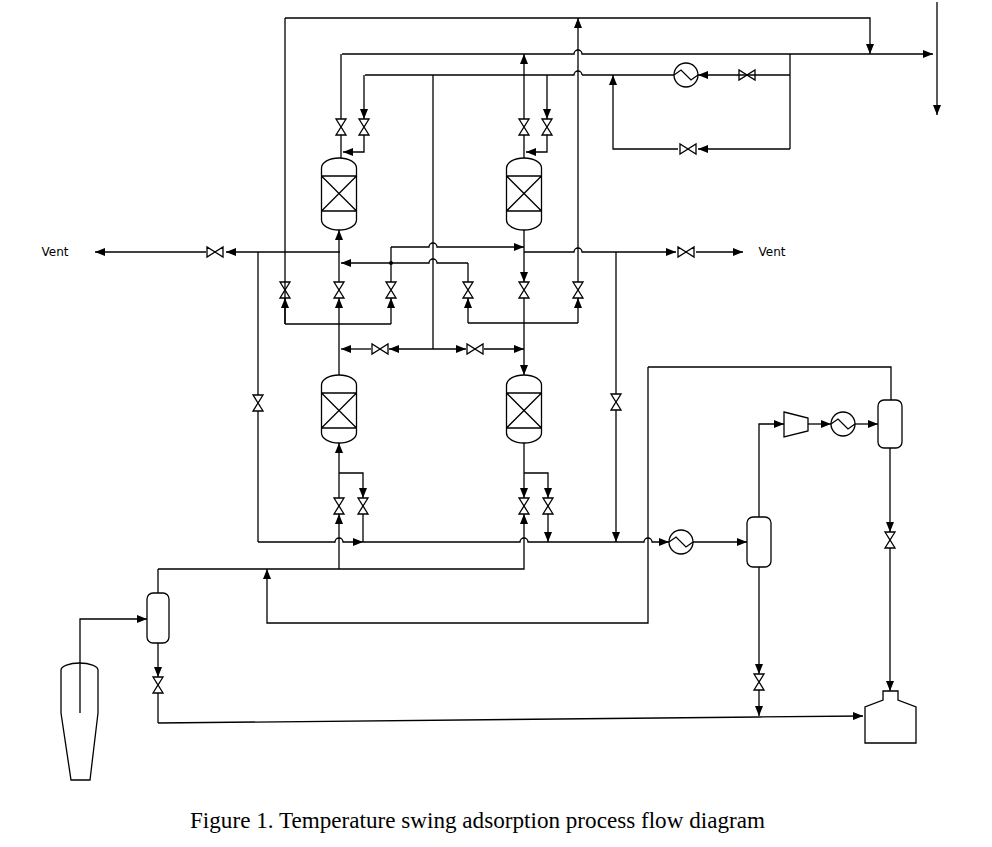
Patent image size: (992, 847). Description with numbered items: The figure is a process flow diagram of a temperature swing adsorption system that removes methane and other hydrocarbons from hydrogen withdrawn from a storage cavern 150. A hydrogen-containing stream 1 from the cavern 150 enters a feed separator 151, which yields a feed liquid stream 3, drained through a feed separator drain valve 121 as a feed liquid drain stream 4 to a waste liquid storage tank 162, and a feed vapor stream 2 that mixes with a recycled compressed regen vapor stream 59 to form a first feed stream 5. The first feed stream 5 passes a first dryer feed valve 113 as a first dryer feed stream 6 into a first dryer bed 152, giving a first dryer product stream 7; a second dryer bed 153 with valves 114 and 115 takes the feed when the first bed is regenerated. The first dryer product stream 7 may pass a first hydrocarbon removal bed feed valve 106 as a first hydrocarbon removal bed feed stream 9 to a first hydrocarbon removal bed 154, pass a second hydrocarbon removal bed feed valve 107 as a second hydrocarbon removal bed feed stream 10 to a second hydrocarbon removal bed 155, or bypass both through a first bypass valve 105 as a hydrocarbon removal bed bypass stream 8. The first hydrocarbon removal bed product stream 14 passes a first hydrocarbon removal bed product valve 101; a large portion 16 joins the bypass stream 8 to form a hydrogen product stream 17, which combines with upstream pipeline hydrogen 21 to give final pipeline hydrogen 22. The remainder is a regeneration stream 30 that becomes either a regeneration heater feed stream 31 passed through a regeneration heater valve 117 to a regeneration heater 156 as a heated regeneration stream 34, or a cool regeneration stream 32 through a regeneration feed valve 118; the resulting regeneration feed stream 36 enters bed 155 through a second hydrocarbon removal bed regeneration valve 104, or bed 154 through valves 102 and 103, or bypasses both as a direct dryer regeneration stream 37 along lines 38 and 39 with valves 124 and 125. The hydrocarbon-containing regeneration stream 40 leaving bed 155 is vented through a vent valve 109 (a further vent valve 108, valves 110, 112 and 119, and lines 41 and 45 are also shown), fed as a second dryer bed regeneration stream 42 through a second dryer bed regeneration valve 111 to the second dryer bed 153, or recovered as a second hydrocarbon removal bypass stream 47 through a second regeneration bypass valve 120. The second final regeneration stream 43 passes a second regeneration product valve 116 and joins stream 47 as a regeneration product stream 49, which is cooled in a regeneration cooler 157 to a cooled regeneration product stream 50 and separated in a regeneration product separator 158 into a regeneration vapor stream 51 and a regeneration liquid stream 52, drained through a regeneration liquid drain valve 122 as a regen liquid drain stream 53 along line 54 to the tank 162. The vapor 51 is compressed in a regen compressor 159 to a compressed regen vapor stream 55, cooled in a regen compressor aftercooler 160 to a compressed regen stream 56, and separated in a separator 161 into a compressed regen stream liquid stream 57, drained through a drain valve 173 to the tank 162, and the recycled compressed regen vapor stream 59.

The hydrogen-containing stream 1 is at (113, 666).
The feed vapor stream 2 is at (334, 548).
The feed liquid stream 3 is at (168, 660).
The feed liquid drain stream 4 is at (458, 711).
The first feed stream 5 is at (331, 541).
The first dryer feed stream 6 is at (343, 470).
The first dryer product stream 7 is at (331, 349).
The hydrocarbon removal bed bypass stream 8 is at (276, 171).
The first hydrocarbon removal bed feed stream 9 is at (345, 256).
The second hydrocarbon removal bed feed stream 10 is at (457, 238).
The first hydrocarbon removal bed product stream 14 is at (341, 146).
The large portion of the hydrocarbon removal bed product stream 16 is at (577, 36).
The hydrogen product stream 17 is at (901, 44).
The upstream pipeline hydrogen 21 is at (950, 28).
The final pipeline hydrogen 22 is at (950, 84).
The regeneration stream 30 is at (800, 64).
The regeneration heater feed stream 31 is at (744, 81).
The cool regeneration stream 32 is at (800, 112).
The heated regeneration stream 34 is at (628, 83).
The regeneration feed stream 36 is at (590, 135).
The direct dryer regeneration stream 37 is at (443, 212).
The line to adsorber 38 is at (387, 340).
The line to adsorber 39 is at (478, 340).
The hydrocarbon-containing regeneration stream 40 is at (536, 255).
The line 41 is at (523, 331).
The second dryer bed regeneration stream 42 is at (534, 336).
The second final regeneration stream 43 is at (536, 470).
The vent header 45 is at (600, 240).
The second hydrocarbon removal bypass stream 47 is at (630, 397).
The regeneration product stream 49 is at (516, 549).
The cooled regeneration product stream 50 is at (720, 552).
The regeneration vapor stream 51 is at (758, 470).
The regeneration liquid stream 52 is at (774, 620).
The regen liquid drain stream 53 is at (773, 703).
The liquid line to tank 54 is at (811, 727).
The compressed regen vapor stream 55 is at (819, 412).
The compressed regen stream 56 is at (866, 412).
The compressed regen stream liquid stream 57 is at (900, 490).
The compressed regen vapor stream 59 is at (579, 486).
The first hydrocarbon removal bed product valve 101 is at (330, 127).
The valve 102 is at (375, 127).
The valve 103 is at (513, 127).
The second hydrocarbon removal bed regeneration valve 104 is at (550, 135).
The first bypass valve 105 is at (274, 290).
The first hydrocarbon removal bed feed valve 106 is at (328, 290).
The second hydrocarbon removal bed feed valve 107 is at (380, 290).
The vent valve 108 is at (215, 260).
The vent valve 109 is at (686, 260).
The valve 110 is at (457, 290).
The second dryer bed regeneration valve 111 is at (513, 290).
The valve 112 is at (567, 290).
The first dryer feed valve 113 is at (327, 506).
The valve 114 is at (374, 506).
The valve 115 is at (512, 506).
The second regeneration product valve 116 is at (559, 506).
The regeneration heater valve 117 is at (747, 83).
The regeneration feed valve 118 is at (688, 157).
The valve 119 is at (248, 397).
The second regeneration bypass valve 120 is at (627, 402).
The feed separator drain valve 121 is at (170, 685).
The regeneration liquid drain valve 122 is at (747, 682).
The valve 124 is at (380, 357).
The valve 125 is at (475, 357).
The cavern 150 is at (79, 721).
The feed separator 151 is at (158, 618).
The first dryer bed 152 is at (339, 409).
The second dryer bed 153 is at (524, 409).
The first hydrocarbon removal bed 154 is at (339, 194).
The second hydrocarbon removal bed 155 is at (524, 194).
The regeneration heater 156 is at (686, 84).
The regeneration cooler 157 is at (681, 553).
The regeneration product separator 158 is at (759, 542).
The regen compressor 159 is at (796, 424).
The regen compressor aftercooler 160 is at (843, 433).
The separator drum 161 is at (890, 424).
The waste liquid storage tank 162 is at (890, 717).
The valve 173 is at (878, 540).